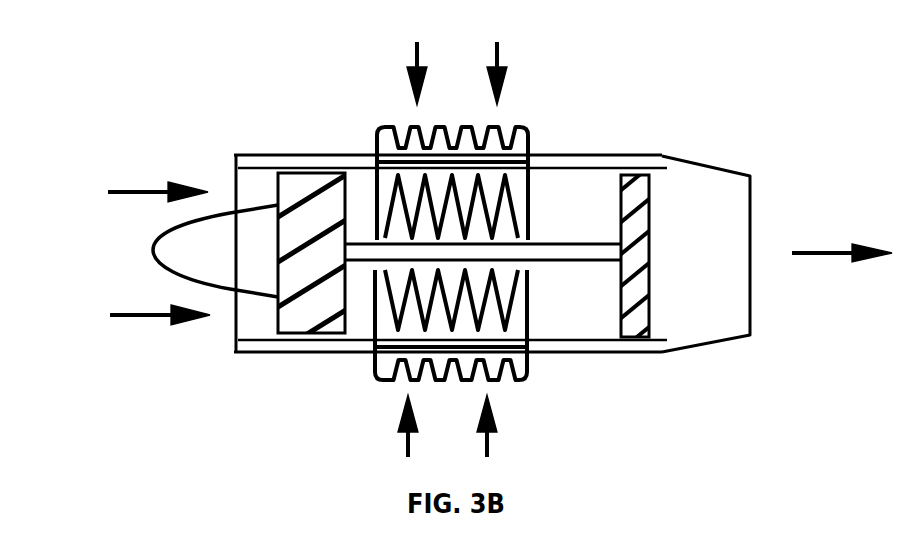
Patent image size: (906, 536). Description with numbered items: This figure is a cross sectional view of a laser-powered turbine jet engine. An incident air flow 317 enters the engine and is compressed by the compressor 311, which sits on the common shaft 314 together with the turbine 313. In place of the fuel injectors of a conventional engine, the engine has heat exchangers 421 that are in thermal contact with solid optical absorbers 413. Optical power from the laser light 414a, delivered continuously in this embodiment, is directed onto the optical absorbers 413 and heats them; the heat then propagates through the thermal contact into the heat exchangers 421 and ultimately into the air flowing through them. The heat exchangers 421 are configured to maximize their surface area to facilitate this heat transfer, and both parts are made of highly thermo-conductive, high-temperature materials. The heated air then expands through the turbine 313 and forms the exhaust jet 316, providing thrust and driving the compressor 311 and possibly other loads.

The compressor 311 is at (315, 287).
The turbine 313 is at (640, 303).
The common shaft 314 is at (548, 253).
The exhaust jet 316 is at (857, 247).
The incident air flow 317 is at (177, 310).
The solid optical absorbers 413 is at (387, 362).
The heat exchangers 421 is at (518, 316).
The laser light 414a is at (497, 95).